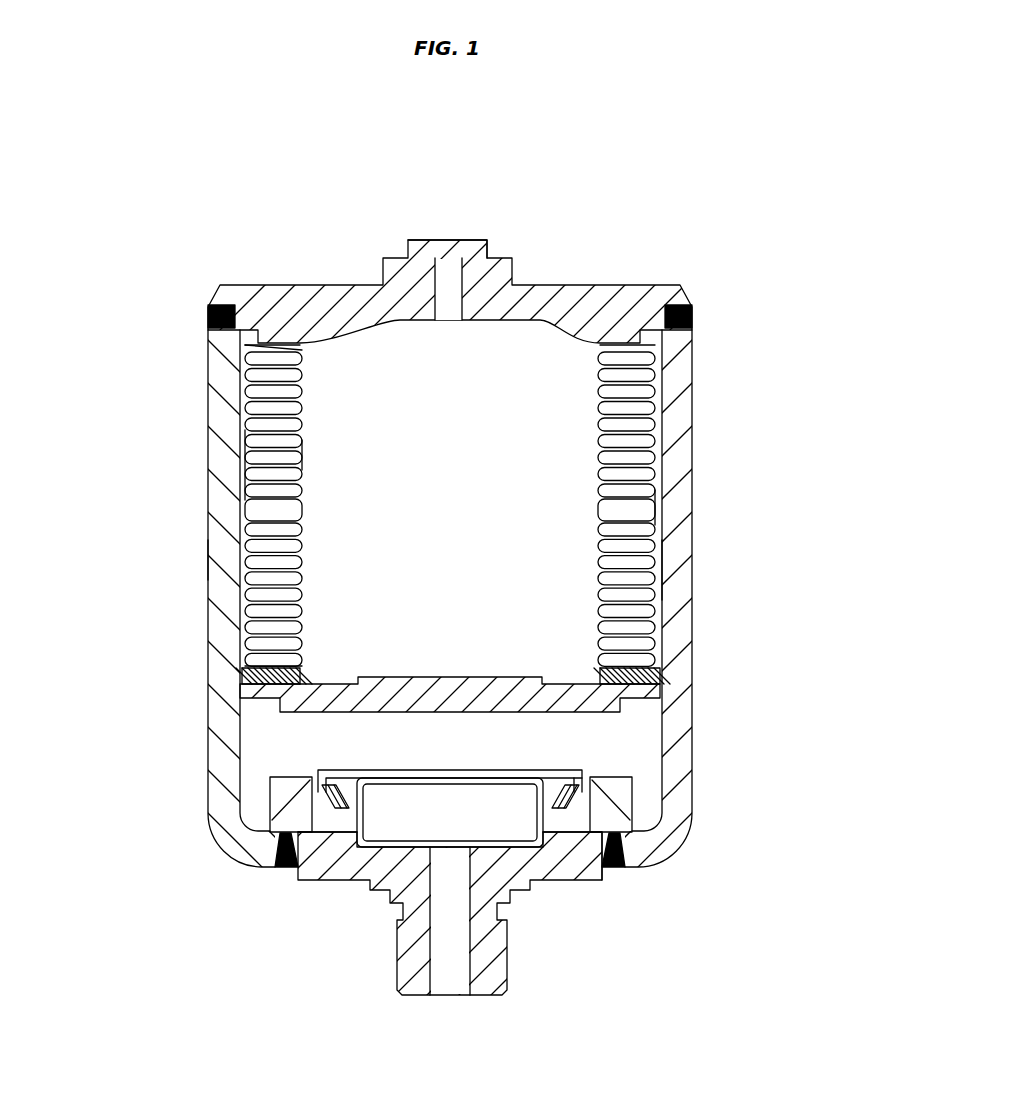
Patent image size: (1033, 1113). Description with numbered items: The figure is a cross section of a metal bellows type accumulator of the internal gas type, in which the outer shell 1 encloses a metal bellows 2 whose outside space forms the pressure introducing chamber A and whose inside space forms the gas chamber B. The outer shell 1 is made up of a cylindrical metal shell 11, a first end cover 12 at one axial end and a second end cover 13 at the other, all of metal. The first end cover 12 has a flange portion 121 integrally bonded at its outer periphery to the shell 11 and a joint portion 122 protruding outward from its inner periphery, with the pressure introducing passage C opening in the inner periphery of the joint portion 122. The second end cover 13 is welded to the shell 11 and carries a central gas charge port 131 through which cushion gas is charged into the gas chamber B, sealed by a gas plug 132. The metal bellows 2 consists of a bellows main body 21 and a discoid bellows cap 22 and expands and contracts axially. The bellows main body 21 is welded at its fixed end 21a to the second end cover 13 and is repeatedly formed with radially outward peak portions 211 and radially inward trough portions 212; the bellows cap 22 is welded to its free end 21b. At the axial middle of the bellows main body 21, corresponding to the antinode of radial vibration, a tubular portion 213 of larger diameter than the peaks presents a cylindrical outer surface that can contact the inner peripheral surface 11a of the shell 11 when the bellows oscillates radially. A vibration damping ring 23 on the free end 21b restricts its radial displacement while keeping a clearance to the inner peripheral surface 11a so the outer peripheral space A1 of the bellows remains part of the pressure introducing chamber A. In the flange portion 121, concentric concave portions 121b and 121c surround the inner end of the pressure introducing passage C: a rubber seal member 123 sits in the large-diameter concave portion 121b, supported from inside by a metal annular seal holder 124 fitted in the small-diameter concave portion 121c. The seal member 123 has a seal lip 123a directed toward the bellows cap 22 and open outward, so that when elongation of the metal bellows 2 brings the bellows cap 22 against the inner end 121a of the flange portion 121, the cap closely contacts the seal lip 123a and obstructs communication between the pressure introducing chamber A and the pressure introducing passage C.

The outer shell 1 is at (205, 261).
The shell 11 is at (222, 606).
The inner peripheral surface 11a is at (662, 572).
The first end cover 12 is at (345, 868).
The second end cover 13 is at (342, 295).
The gas charge port 131 is at (448, 280).
The gas plug 132 is at (475, 247).
The metal bellows 2 is at (457, 504).
The bellows main body 21 is at (247, 425).
The fixed end 21a is at (262, 346).
The free end 21b is at (302, 680).
The peak portions 211 is at (247, 465).
The trough portions 212 is at (302, 456).
The tubular portion 213 is at (662, 507).
The bellows cap 22 is at (280, 700).
The vibration damping ring 23 is at (662, 677).
The flange portion 121 is at (565, 860).
The inner end 121a is at (612, 776).
The large-diameter concave portion 121b is at (330, 792).
The small-diameter concave portion 121c is at (366, 834).
The joint portion 122 is at (505, 968).
The seal member 123 is at (632, 808).
The seal lip 123a is at (573, 790).
The annular seal holder 124 is at (520, 776).
The pressure introducing chamber A is at (263, 760).
The outer peripheral space A1 is at (240, 560).
The gas chamber B is at (540, 380).
The pressure introducing passage C is at (453, 970).